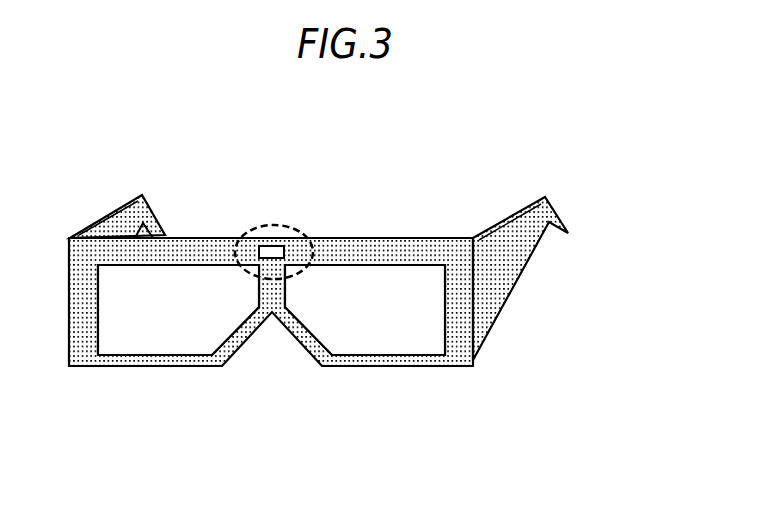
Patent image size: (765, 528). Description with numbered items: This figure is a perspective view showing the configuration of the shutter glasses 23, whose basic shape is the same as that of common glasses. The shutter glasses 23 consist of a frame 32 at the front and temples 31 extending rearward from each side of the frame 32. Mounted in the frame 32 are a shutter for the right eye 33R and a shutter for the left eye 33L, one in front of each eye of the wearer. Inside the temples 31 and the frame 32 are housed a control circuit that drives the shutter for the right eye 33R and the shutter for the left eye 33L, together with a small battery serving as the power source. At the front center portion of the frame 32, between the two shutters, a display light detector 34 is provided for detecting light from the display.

The shutter glasses 23 is at (352, 330).
The temples 31 is at (512, 248).
The frame 32 is at (466, 352).
The shutter for the right eye 33R is at (162, 330).
The shutter for the left eye 33L is at (387, 330).
The display light detector 34 is at (292, 238).